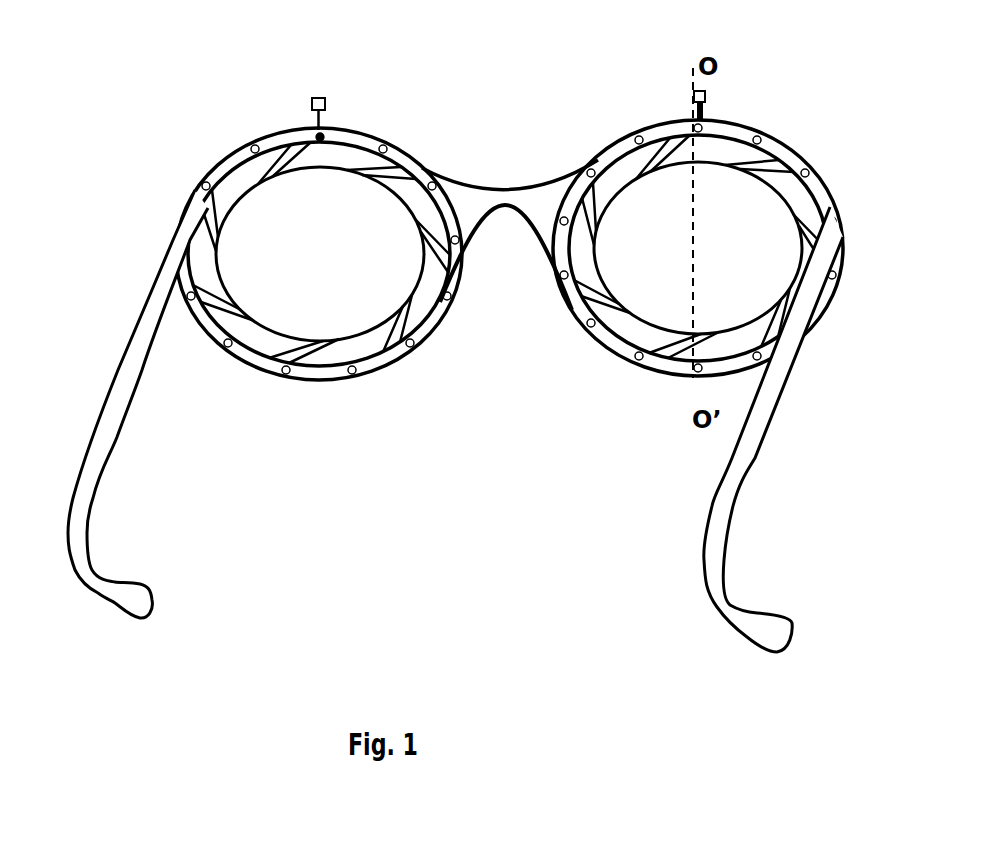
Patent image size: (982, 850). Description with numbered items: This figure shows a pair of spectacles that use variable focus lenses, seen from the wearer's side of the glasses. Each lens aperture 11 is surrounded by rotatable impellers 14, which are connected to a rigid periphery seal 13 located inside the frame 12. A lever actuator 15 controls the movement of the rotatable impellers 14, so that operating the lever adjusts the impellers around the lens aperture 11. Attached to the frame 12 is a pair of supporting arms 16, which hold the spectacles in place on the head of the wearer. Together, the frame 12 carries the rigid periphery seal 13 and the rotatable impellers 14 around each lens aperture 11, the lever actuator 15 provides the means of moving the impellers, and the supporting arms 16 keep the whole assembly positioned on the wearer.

The lens aperture 11 is at (327, 198).
The frame 12 is at (482, 180).
The rigid periphery seal 13 is at (613, 150).
The rotatable impellers 14 is at (663, 152).
The lever actuator 15 is at (707, 107).
The supporting arms 16 is at (760, 447).